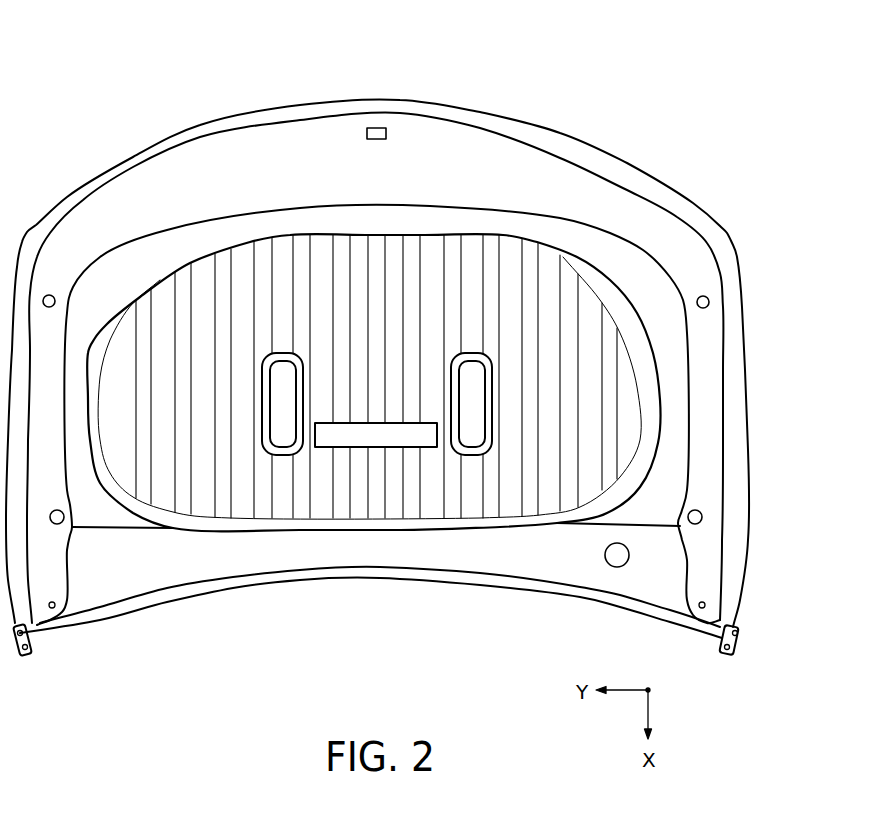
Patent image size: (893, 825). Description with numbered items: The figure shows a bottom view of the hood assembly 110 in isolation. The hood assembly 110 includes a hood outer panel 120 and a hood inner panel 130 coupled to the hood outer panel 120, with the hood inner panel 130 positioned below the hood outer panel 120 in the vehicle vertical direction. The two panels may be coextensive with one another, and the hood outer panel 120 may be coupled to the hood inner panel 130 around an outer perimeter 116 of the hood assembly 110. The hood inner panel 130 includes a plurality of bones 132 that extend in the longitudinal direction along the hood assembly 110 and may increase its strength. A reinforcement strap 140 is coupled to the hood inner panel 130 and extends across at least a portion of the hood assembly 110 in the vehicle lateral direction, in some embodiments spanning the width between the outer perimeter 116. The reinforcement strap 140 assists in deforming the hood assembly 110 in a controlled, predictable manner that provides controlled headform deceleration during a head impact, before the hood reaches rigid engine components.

The hood assembly 110 is at (408, 332).
The outer perimeter 116 is at (745, 408).
The hood outer panel 120 is at (743, 243).
The hood inner panel 130 is at (373, 371).
The bones 132 is at (180, 503).
The reinforcement strap 140 is at (427, 452).